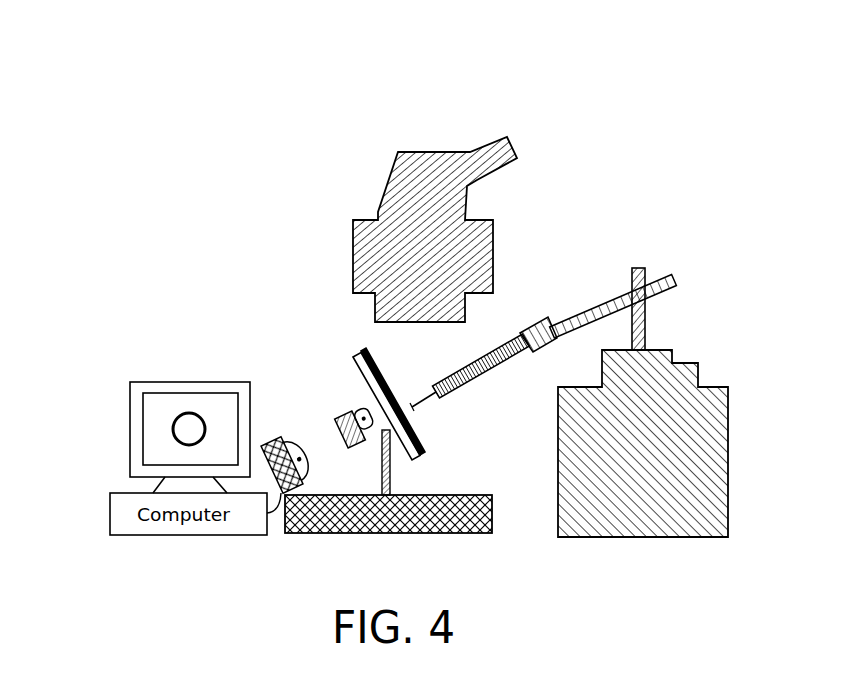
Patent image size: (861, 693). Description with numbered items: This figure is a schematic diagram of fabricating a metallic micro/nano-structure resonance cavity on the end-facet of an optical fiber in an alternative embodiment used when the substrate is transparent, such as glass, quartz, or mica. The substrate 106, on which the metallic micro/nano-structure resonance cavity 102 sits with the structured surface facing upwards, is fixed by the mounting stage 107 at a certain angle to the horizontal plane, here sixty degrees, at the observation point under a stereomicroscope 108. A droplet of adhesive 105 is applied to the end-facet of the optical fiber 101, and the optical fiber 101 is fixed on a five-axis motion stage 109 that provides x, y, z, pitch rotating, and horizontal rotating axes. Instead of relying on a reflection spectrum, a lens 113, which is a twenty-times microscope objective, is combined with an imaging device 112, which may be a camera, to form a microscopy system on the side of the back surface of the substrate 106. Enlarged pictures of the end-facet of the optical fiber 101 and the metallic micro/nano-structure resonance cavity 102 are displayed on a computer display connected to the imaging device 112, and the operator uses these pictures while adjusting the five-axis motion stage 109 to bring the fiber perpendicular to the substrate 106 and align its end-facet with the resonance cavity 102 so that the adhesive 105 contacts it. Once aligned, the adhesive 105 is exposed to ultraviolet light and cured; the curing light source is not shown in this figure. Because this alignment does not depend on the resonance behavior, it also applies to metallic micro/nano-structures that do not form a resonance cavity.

The optical fiber 101 is at (433, 403).
The metallic micro/nano-structure resonance cavity 102 is at (365, 349).
The adhesive 105 is at (412, 405).
The substrate 106 is at (356, 355).
The mounting stage 107 is at (394, 461).
The stereomicroscope 108 is at (466, 152).
The five-axis motion stage 109 is at (644, 266).
The imaging device 112 is at (280, 437).
The lens 113 is at (337, 413).